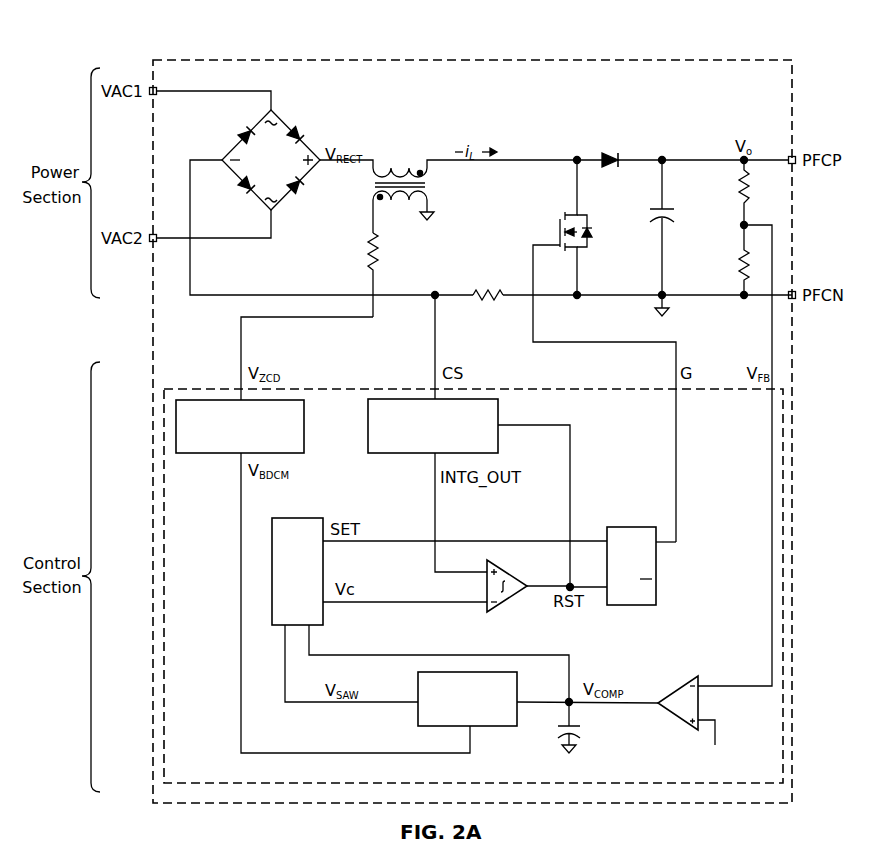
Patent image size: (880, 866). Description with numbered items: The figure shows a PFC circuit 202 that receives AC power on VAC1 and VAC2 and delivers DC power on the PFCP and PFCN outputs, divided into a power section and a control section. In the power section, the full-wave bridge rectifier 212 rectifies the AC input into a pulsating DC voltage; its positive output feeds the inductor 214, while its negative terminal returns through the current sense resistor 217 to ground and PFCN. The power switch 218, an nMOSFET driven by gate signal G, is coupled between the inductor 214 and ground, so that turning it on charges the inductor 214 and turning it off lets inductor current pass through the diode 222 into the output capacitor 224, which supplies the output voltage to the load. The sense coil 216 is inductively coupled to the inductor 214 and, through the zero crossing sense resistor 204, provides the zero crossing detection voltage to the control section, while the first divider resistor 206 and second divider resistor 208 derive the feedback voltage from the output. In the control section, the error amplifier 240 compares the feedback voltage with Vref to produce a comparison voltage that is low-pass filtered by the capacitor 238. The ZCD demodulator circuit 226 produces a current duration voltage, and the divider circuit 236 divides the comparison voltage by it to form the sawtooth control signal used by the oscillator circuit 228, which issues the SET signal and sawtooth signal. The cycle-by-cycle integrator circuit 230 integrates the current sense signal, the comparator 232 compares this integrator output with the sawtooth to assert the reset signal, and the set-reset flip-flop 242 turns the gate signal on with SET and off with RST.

The PFC circuit 202 is at (200, 60).
The zero crossing sense resistor 204 is at (368, 252).
The first divider resistor 206 is at (739, 190).
The second divider resistor 208 is at (739, 270).
The full-wave bridge rectifier 212 is at (280, 118).
The inductor 214 is at (398, 175).
The sense coil 216 is at (403, 200).
The current sense resistor 217 is at (485, 290).
The power switch 218 is at (553, 233).
The diode 222 is at (615, 152).
The output capacitor 224 is at (652, 208).
The ZCD demodulator circuit 226 is at (222, 455).
The oscillator circuit 228 is at (298, 518).
The cycle-by-cycle integrator circuit 230 is at (499, 421).
The comparator 232 is at (510, 603).
The divider circuit 236 is at (418, 720).
The capacitor 238 is at (560, 738).
The error amplifier 240 is at (676, 690).
The switch control set-reset flip-flop 242 is at (650, 605).